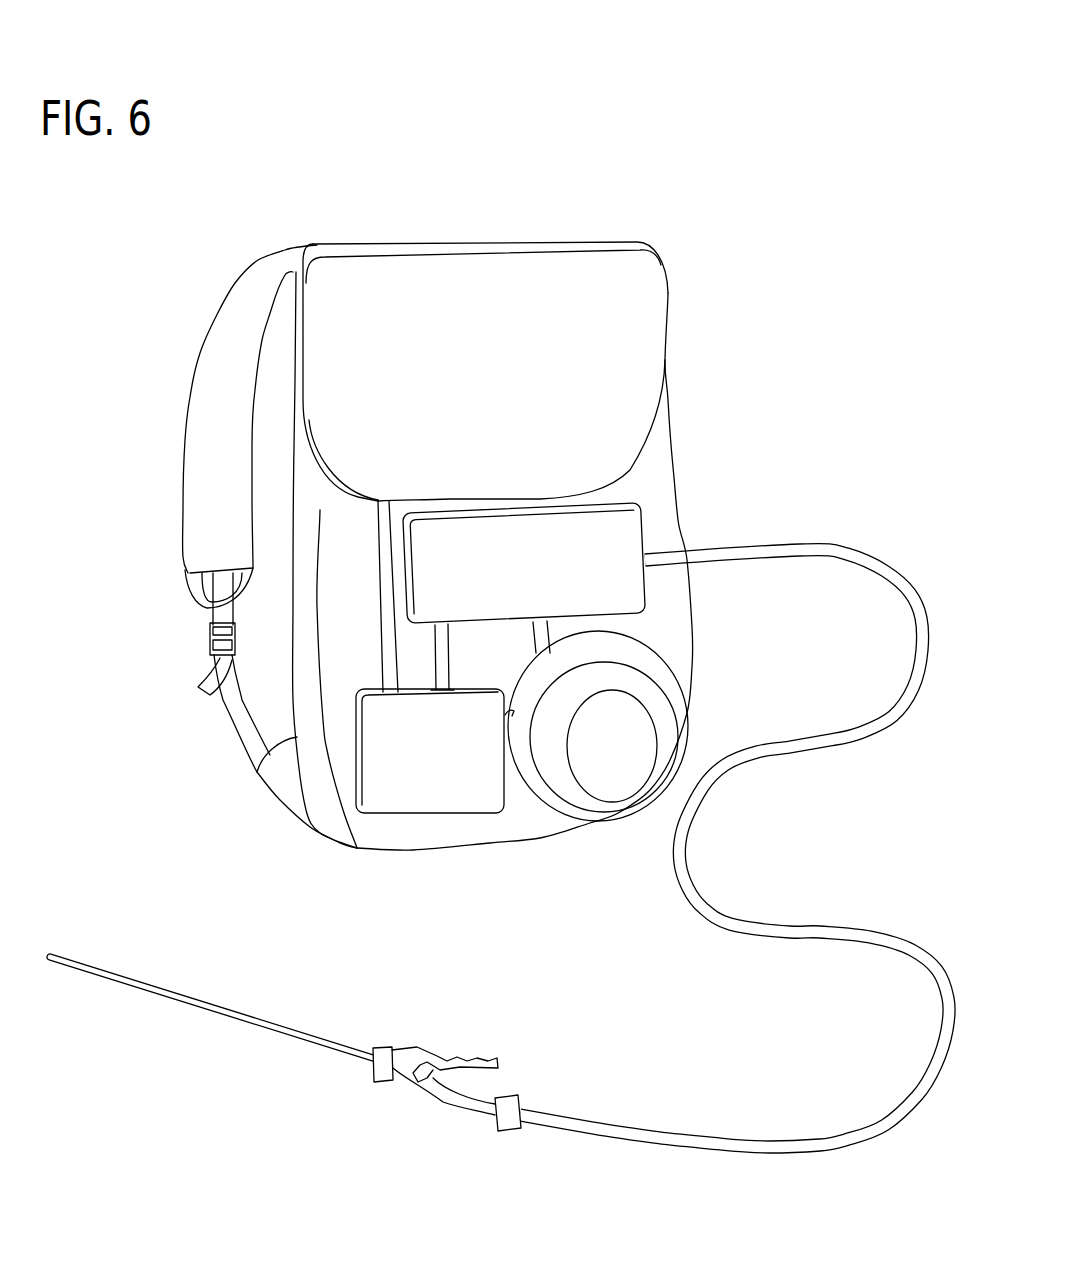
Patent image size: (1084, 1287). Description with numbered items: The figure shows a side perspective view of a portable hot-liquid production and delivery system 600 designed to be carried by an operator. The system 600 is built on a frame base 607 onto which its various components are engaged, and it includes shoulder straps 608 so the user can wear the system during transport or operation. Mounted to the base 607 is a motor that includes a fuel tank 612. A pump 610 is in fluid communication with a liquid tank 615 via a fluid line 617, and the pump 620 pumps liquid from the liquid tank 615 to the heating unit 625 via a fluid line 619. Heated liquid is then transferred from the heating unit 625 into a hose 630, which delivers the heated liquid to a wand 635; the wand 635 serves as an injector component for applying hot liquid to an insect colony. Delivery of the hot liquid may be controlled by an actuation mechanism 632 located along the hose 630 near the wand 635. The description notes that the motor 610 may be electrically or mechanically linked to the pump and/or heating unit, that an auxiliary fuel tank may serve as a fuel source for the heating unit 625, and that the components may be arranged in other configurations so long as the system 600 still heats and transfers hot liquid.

The hot-liquid production and delivery system 600 is at (416, 140).
The frame base 607 is at (662, 633).
The shoulder straps 608 is at (285, 248).
The pump 610 is at (540, 812).
The fuel tank 612 is at (653, 737).
The liquid tank 615 is at (600, 237).
The fluid line 617 is at (380, 600).
The fluid line 619 is at (450, 655).
The pump 620 is at (417, 814).
The heating unit 625 is at (643, 515).
The hose 630 is at (803, 543).
The actuation mechanism 632 is at (427, 1052).
The wand 635 is at (257, 1017).